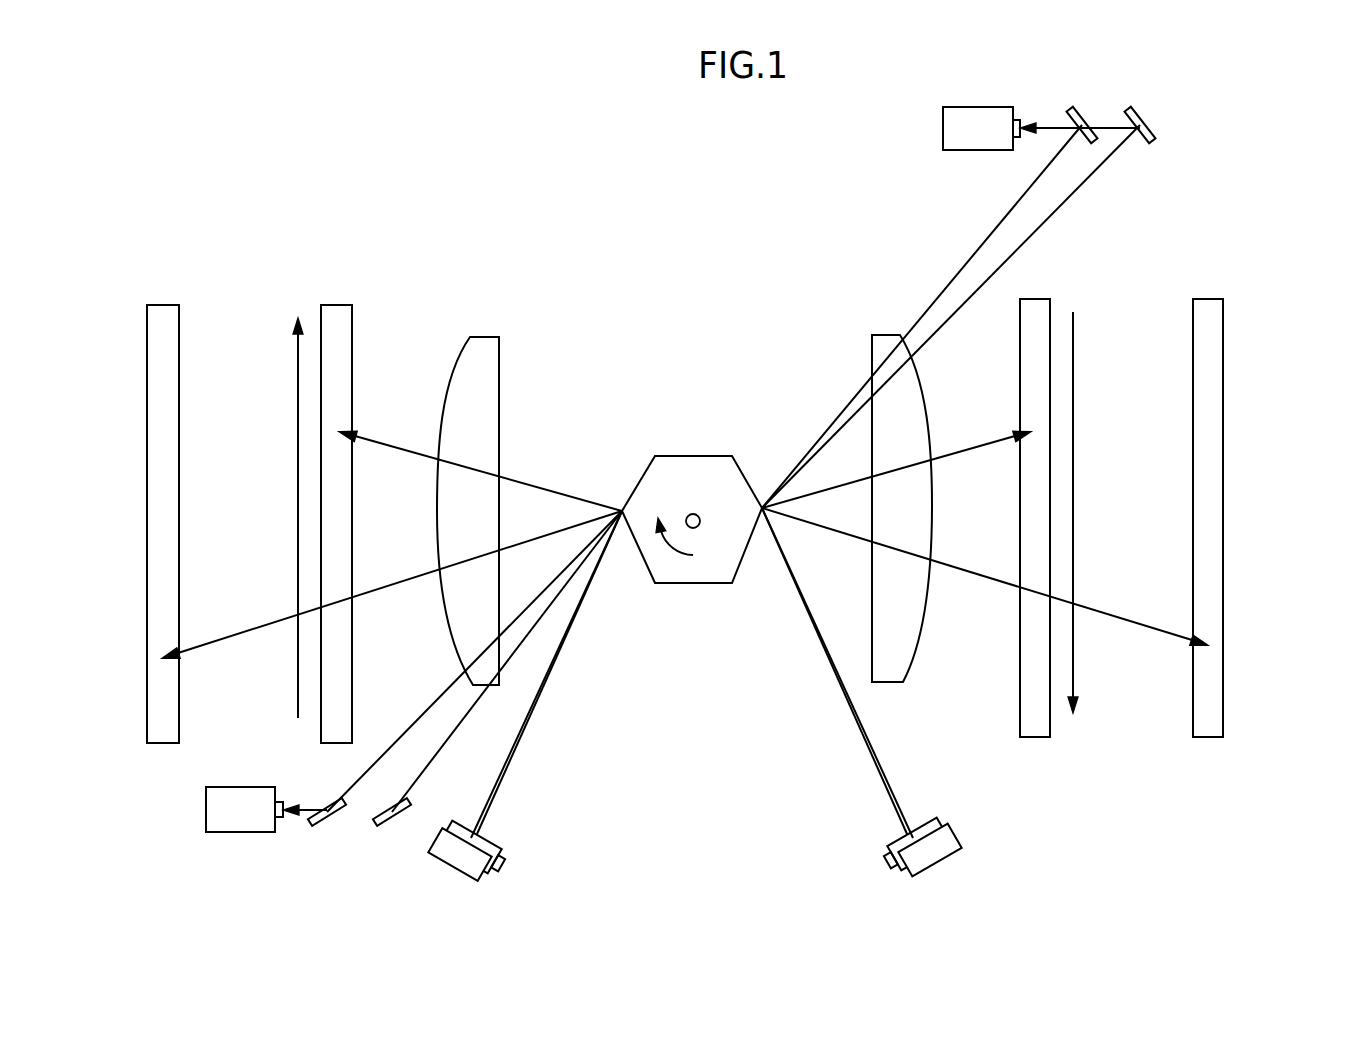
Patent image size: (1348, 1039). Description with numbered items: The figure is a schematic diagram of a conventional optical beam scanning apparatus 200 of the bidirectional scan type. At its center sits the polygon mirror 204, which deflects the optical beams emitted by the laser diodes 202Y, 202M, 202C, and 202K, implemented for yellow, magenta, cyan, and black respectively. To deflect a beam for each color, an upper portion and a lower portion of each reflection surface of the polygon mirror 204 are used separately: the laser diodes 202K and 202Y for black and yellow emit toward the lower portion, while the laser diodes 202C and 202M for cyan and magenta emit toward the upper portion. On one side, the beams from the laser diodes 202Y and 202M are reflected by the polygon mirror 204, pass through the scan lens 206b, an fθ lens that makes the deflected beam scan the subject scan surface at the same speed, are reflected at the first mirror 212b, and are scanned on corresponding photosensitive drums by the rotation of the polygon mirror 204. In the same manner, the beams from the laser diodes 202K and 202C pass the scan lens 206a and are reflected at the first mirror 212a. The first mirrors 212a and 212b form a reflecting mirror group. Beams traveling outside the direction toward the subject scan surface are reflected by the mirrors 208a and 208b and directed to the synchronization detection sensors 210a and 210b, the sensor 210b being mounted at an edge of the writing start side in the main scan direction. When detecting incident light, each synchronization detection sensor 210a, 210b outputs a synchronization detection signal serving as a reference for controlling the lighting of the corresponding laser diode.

The optical beam scanning apparatus 200 is at (1281, 77).
The laser diode 202C is at (443, 862).
The laser diode 202K is at (497, 865).
The laser diode 202Y is at (890, 863).
The laser diode 202M is at (947, 853).
The polygon mirror 204 is at (692, 583).
The scan lens 206a is at (487, 337).
The scan lens 206b is at (883, 335).
The mirror 208a is at (348, 815).
The mirror 208b is at (1077, 110).
The synchronization detection sensor 210a is at (242, 822).
The synchronization detection sensor 210b is at (978, 117).
The first mirror 212a is at (338, 303).
The first mirror 212b is at (1033, 298).